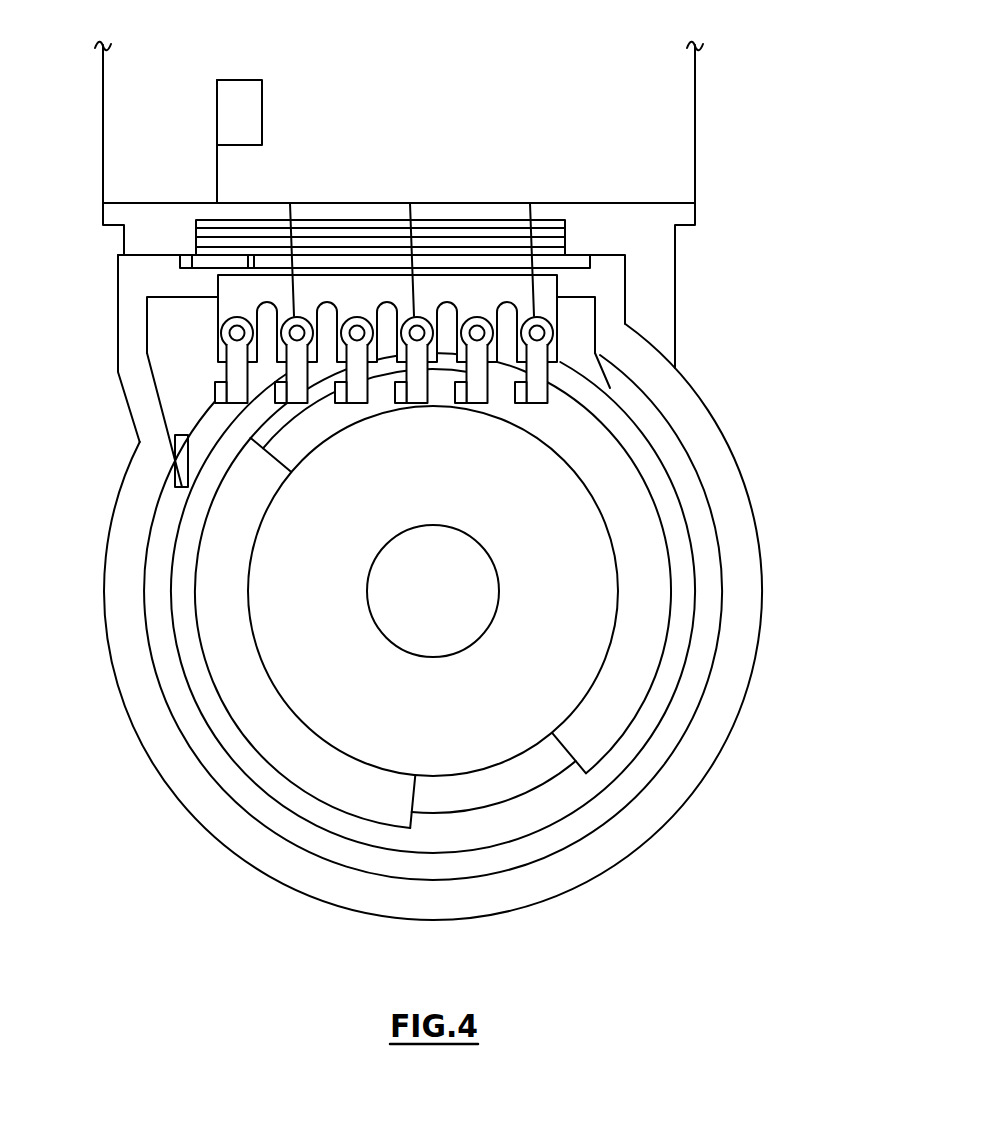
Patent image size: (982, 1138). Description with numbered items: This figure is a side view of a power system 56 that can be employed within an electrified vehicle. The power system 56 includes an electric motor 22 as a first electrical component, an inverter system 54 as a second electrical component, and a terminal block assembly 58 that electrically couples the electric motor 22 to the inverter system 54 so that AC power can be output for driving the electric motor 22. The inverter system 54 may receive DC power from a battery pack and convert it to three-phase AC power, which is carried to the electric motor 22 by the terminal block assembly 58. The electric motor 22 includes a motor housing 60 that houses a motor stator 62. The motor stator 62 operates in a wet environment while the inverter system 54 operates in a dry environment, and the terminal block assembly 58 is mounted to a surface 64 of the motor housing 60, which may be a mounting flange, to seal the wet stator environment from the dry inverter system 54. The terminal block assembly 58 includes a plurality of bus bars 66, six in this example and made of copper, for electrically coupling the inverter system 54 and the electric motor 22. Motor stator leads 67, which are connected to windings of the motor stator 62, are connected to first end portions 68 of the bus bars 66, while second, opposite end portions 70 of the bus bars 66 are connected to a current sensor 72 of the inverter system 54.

The electric motor 22 is at (773, 527).
The inverter system 54 is at (697, 122).
The power system 56 is at (424, 96).
The terminal block assembly 58 is at (232, 262).
The motor housing 60 is at (123, 650).
The motor stator 62 is at (238, 688).
The surface 64 is at (152, 238).
The bus bars 66 is at (217, 172).
The motor stator leads 67 is at (204, 393).
The first end portions 68 is at (244, 312).
The second end portions 70 is at (217, 90).
The current sensor 72 is at (258, 102).